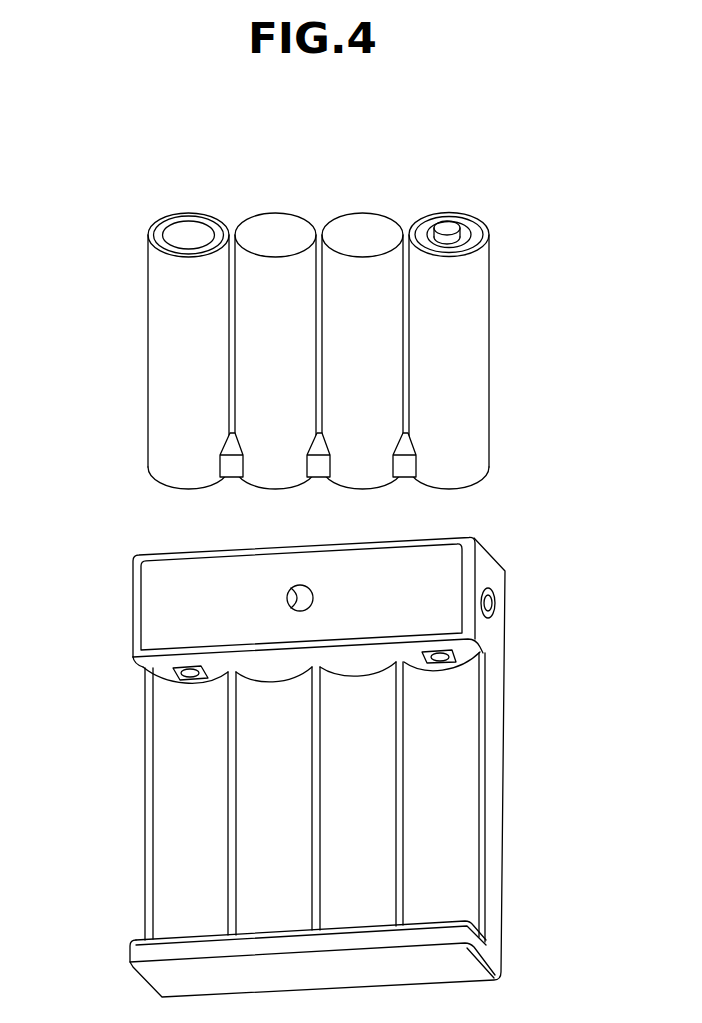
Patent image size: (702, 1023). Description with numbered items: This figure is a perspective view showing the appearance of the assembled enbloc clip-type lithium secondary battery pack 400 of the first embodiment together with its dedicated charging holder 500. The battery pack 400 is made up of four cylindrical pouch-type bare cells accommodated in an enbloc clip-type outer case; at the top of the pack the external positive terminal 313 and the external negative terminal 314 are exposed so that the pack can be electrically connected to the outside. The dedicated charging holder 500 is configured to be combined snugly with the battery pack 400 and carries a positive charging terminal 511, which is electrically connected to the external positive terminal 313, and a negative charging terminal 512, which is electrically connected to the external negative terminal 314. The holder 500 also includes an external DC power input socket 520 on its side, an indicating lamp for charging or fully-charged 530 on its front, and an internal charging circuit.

The external positive terminal 313 is at (457, 230).
The external negative terminal 314 is at (172, 235).
The enbloc clip-type lithium secondary battery pack 400 is at (305, 328).
The dedicated charging holder 500 is at (317, 742).
The positive charging terminal 511 is at (441, 658).
The negative charging terminal 512 is at (187, 674).
The external DC power input socket 520 is at (495, 603).
The indicating lamp for charging or fully-charged 530 is at (302, 600).